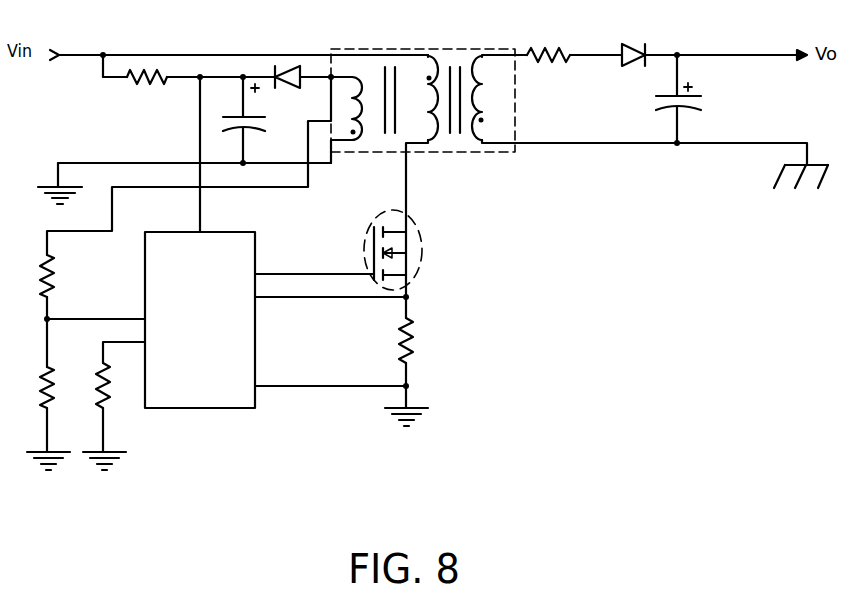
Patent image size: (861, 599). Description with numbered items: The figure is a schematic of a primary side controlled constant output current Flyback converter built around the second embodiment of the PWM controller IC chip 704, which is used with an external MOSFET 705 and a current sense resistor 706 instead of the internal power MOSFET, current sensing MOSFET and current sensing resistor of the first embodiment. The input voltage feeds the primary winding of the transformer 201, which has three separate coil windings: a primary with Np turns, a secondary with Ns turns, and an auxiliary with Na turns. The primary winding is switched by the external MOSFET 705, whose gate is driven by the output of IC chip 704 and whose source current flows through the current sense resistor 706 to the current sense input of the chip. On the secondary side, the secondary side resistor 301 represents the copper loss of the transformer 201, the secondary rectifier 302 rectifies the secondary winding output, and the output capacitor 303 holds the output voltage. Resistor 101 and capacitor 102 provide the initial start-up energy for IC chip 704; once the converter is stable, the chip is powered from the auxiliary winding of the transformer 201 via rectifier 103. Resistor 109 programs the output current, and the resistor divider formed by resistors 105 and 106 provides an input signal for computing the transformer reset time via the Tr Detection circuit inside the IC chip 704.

The resistor 101 is at (147, 86).
The capacitor 102 is at (258, 133).
The rectifier 103 is at (283, 87).
The transformer 201 is at (417, 48).
The secondary side resistor 301 is at (548, 48).
The secondary rectifier 302 is at (629, 46).
The output capacitor 303 is at (667, 110).
The PWM controller IC chip 704 is at (212, 293).
The external MOSFET 705 is at (378, 221).
The current sense resistor 706 is at (401, 354).
The resistor divider 105 is at (43, 289).
The resistor divider 106 is at (43, 399).
The resistor 109 is at (99, 399).